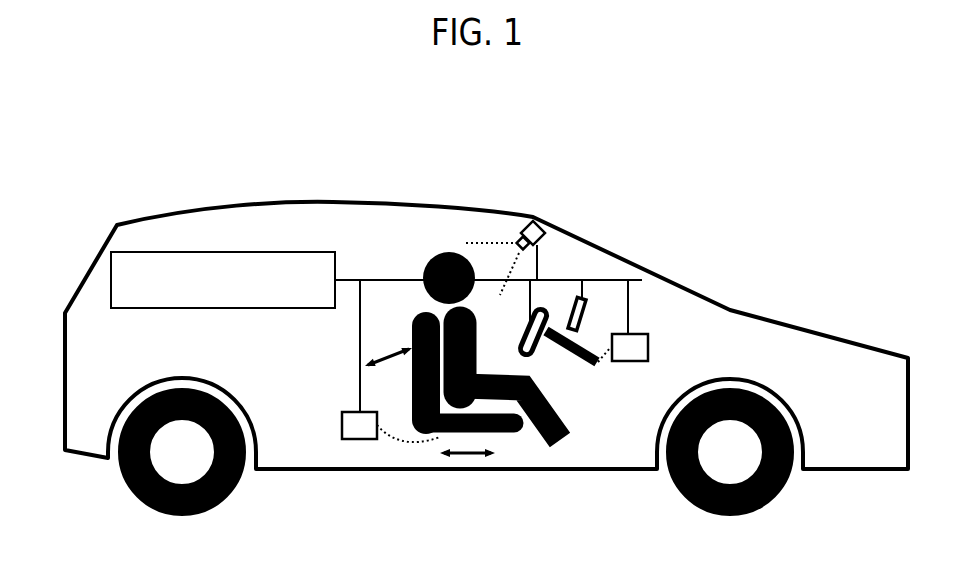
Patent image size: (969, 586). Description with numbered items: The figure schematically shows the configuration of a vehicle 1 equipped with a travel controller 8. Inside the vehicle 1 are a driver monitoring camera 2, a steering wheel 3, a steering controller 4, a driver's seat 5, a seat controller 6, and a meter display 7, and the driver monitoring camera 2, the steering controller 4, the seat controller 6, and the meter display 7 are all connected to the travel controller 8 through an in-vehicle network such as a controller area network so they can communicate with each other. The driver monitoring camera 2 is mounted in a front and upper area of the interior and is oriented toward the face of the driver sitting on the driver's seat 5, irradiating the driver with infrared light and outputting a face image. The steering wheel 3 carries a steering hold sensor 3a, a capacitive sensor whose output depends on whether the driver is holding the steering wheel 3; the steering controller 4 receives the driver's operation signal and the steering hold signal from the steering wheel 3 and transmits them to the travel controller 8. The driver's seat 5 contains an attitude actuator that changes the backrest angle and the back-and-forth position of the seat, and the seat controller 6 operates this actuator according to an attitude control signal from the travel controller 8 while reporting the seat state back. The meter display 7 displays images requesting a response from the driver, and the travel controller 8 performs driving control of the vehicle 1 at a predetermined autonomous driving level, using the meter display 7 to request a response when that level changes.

The vehicle 1 is at (745, 162).
The driver monitoring camera 2 is at (540, 228).
The steering wheel 3 is at (590, 420).
The steering hold sensor 3a is at (548, 330).
The steering controller 4 is at (648, 345).
The driver's seat 5 is at (507, 432).
The seat controller 6 is at (353, 439).
The meter display 7 is at (588, 303).
The travel controller 8 is at (212, 252).